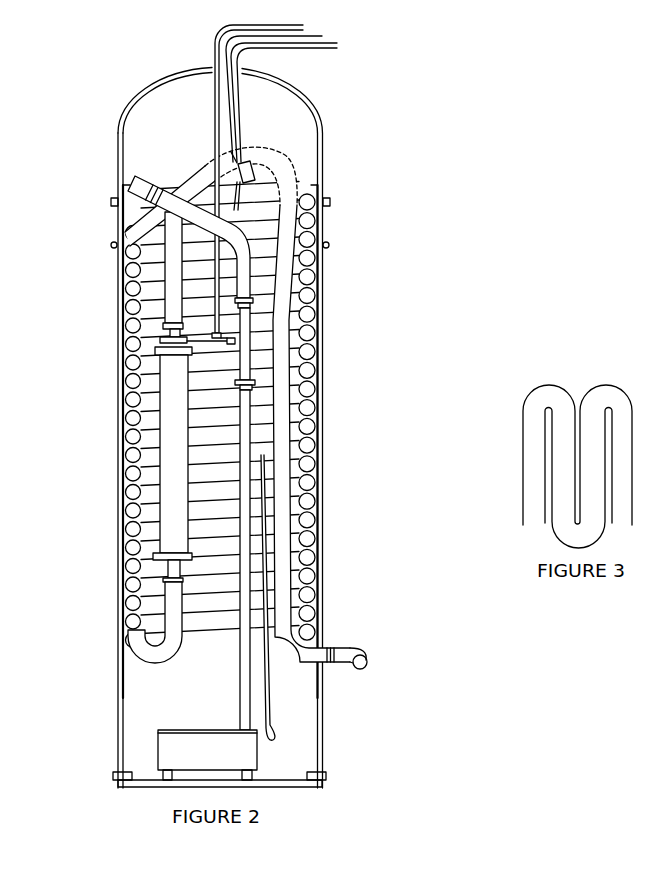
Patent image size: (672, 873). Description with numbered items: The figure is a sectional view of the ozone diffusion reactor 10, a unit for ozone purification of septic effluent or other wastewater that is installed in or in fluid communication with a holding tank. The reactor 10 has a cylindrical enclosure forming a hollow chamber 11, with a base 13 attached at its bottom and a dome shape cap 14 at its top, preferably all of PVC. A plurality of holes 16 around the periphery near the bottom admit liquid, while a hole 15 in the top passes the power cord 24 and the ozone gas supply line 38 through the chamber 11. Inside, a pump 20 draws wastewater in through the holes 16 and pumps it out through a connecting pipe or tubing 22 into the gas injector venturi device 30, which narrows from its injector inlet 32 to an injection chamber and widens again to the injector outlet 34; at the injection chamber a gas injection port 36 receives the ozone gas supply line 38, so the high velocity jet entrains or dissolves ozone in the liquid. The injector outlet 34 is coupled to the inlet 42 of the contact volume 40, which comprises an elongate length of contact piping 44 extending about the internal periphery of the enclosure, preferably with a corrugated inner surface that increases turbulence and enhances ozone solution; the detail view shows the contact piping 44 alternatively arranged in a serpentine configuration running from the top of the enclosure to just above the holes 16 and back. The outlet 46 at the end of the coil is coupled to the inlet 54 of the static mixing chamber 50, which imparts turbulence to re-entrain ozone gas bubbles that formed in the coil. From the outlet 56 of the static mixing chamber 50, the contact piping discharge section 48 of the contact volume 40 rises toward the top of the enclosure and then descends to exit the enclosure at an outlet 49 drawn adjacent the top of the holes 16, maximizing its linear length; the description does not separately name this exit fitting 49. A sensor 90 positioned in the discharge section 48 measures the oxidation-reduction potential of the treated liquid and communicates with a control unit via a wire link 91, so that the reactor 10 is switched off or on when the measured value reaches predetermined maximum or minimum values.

In FIG. 2, the ozone diffusion reactor 10 is at (150, 58).
In FIG. 2, the hollow chamber 11 is at (293, 130).
In FIG. 2, the base 13 is at (135, 787).
In FIG. 2, the dome shape cap 14 is at (136, 106).
In FIG. 2, the hole 15 is at (212, 62).
In FIG. 2, the holes 16 is at (118, 705).
In FIG. 2, the pump 20 is at (158, 752).
In FIG. 2, the connecting pipe or tubing 22 is at (242, 693).
In FIG. 2, the power cord 24 is at (238, 103).
In FIG. 2, the gas injector venturi device 30 is at (262, 343).
In FIG. 2, the injector inlet 32 is at (258, 372).
In FIG. 2, the injector outlet 34 is at (253, 302).
In FIG. 2, the gas injection port 36 is at (233, 348).
In FIG. 2, the ozone gas supply line 38 is at (214, 133).
In FIG. 2, the contact volume 40 is at (147, 219).
In FIG. 2, the inlet 42 is at (247, 300).
In FIG. 2, the contact piping 44 is at (120, 247).
In FIG. 3, the contact piping 44 is at (545, 400).
In FIG. 2, the outlet 46 is at (165, 590).
In FIG. 2, the contact piping discharge section 48 is at (300, 163).
In FIG. 2, the outlet 49 is at (368, 665).
In FIG. 2, the static mixing chamber 50 is at (160, 435).
In FIG. 2, the inlet 54 is at (152, 571).
In FIG. 2, the outlet 56 is at (162, 340).
In FIG. 2, the sensor 90 is at (267, 187).
In FIG. 2, the wire link 91 is at (234, 143).